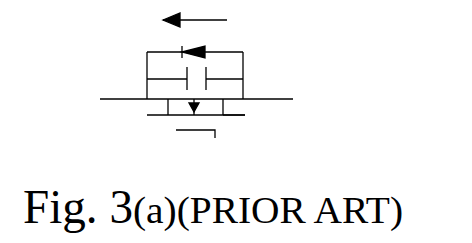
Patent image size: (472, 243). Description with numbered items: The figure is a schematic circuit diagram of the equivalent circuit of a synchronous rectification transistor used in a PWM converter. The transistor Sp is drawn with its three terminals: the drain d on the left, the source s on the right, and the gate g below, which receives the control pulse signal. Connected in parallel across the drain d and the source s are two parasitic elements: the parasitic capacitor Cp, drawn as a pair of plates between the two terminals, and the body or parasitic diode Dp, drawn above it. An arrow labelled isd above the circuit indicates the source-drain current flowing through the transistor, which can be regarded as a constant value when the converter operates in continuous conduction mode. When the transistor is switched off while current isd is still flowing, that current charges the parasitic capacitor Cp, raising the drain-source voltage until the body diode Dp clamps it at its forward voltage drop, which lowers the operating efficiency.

The drain d is at (134, 84).
The source s is at (259, 89).
The gate g is at (196, 128).
The body/parasitic diode Dp is at (195, 41).
The parasitic capacitor Cp is at (210, 77).
The MOSFET switch Sp is at (243, 125).
The source-drain current isd is at (195, 15).